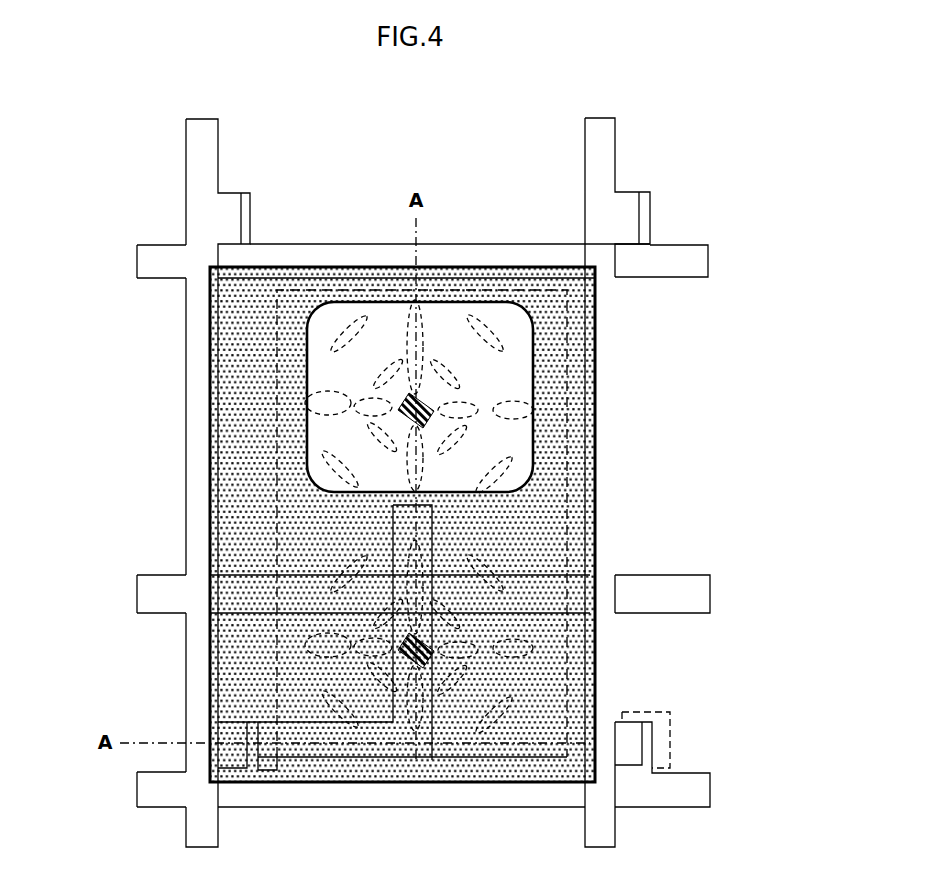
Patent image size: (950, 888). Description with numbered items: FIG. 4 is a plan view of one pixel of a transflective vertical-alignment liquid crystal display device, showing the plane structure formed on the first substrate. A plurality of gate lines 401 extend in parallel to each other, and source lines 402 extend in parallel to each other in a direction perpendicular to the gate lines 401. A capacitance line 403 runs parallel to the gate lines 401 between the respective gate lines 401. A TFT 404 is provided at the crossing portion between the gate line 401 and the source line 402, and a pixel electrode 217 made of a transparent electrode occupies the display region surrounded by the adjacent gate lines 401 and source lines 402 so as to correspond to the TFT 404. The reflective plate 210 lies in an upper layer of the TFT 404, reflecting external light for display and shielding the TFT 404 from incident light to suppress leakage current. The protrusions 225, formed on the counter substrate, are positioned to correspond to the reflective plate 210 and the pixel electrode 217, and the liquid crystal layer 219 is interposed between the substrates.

The reflective plate 210 is at (597, 540).
The pixel electrode 217 is at (578, 684).
The liquid crystal layer 219 is at (352, 323).
The protrusion 225 is at (425, 646).
The gate line 401 is at (142, 782).
The source line 402 is at (185, 150).
The capacitance line 403 is at (142, 615).
The TFT 404 is at (262, 710).